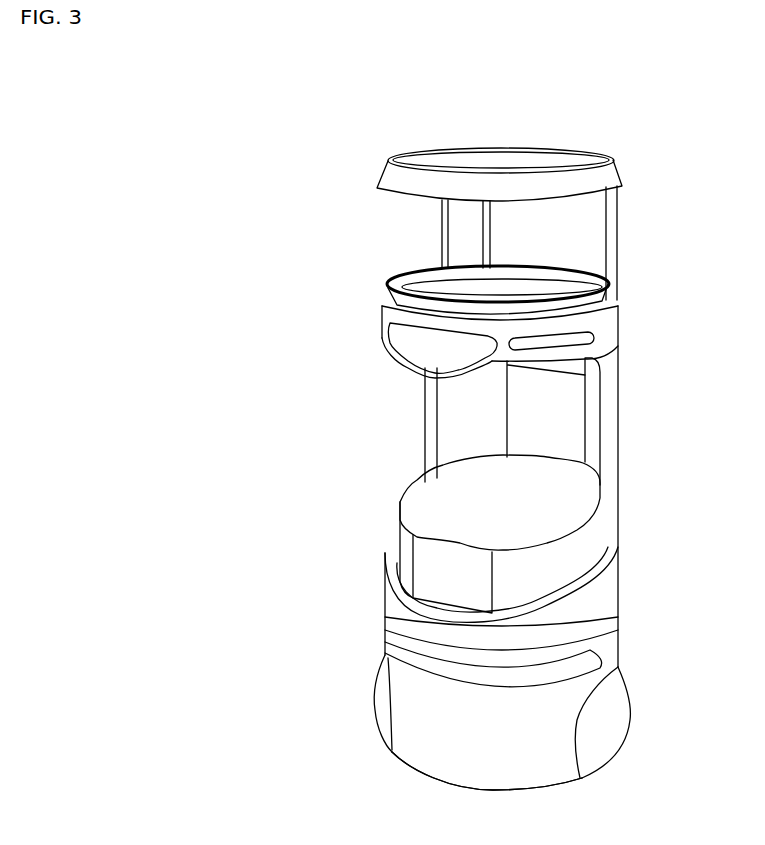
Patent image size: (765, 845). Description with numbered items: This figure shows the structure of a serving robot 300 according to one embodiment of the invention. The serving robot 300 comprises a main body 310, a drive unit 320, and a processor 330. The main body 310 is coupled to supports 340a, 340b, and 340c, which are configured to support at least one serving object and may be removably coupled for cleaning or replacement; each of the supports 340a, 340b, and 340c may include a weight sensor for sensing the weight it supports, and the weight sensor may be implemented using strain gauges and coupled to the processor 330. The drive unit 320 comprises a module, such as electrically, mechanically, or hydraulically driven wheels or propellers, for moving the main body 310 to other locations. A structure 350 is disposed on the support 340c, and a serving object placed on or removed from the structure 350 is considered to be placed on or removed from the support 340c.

The serving robot 300 is at (287, 81).
The main body 310 is at (658, 173).
The drive unit 320 is at (420, 770).
The processor 330 is at (417, 703).
The support 340a is at (437, 162).
The support 340b is at (445, 293).
The support 340c is at (440, 610).
The structure 350 is at (427, 518).